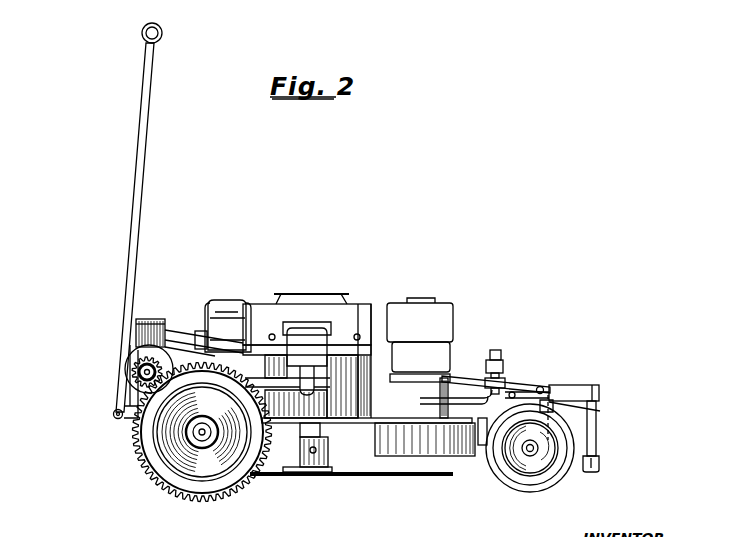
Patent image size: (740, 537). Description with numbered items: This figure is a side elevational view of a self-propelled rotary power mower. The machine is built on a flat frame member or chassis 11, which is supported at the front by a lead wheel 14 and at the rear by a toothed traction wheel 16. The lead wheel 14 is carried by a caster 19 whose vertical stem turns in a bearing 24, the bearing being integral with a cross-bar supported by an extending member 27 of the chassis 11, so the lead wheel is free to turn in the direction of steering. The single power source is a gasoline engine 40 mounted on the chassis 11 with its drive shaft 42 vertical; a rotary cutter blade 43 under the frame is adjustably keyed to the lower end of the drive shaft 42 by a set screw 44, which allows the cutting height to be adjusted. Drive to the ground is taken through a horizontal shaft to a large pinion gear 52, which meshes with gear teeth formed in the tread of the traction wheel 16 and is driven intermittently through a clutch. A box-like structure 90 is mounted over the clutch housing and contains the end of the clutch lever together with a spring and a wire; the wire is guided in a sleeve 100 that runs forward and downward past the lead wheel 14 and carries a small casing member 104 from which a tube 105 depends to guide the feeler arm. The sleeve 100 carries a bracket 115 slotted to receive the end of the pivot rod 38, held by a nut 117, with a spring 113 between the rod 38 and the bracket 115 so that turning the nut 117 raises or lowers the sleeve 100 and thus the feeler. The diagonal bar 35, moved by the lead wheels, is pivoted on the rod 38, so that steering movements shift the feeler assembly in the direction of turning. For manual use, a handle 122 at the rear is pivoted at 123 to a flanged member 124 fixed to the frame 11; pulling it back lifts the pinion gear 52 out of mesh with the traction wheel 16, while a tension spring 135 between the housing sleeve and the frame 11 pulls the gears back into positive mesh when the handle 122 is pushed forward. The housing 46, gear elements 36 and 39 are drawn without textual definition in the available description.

The frame member 11 is at (352, 421).
The lead wheel 14 is at (520, 490).
The traction wheel 16 is at (152, 466).
The caster 19 is at (545, 466).
The bearing 24 is at (562, 405).
The extending member 27 is at (485, 427).
The diagonal bar 35 is at (541, 387).
The arm 36 is at (512, 385).
The pivot rod 38 is at (459, 398).
The housing 39 is at (428, 425).
The gasoline engine 40 is at (268, 306).
The drive shaft 42 is at (302, 428).
The cutter blade 43 is at (357, 478).
The set screw 44 is at (312, 452).
The gear housing 46 is at (115, 365).
The pinion gear 52 is at (135, 373).
The box-like structure 90 is at (147, 322).
The sleeve 100 is at (180, 333).
The casing member 104 is at (597, 386).
The tube 105 is at (597, 435).
The spring 113 is at (502, 380).
The bracket 115 is at (484, 372).
The nut 117 is at (498, 352).
The handle 122 is at (140, 130).
The pivot 123 is at (112, 418).
The flanged member 124 is at (130, 421).
The tension spring 135 is at (138, 388).